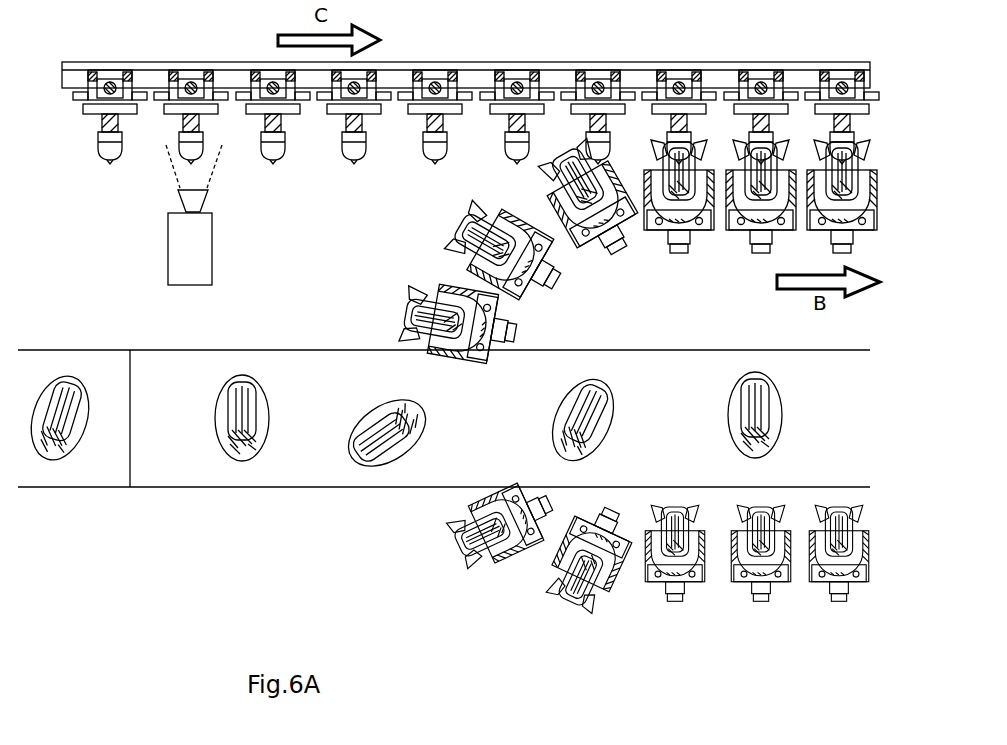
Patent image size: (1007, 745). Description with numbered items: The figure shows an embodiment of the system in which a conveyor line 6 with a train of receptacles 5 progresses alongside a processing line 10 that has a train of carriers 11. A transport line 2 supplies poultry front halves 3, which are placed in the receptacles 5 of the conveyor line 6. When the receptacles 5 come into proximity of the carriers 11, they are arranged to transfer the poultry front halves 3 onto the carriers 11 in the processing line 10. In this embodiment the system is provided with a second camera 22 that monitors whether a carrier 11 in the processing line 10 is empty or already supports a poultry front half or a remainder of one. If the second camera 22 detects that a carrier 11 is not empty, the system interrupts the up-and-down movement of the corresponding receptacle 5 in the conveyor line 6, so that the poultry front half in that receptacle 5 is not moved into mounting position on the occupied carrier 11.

The transport line 2 is at (318, 488).
The poultry front halves 3 is at (235, 467).
The receptacles 5 is at (739, 237).
The conveyor line 6 is at (530, 560).
The processing line 10 is at (458, 62).
The carriers 11 is at (196, 68).
The second camera 22 is at (170, 245).